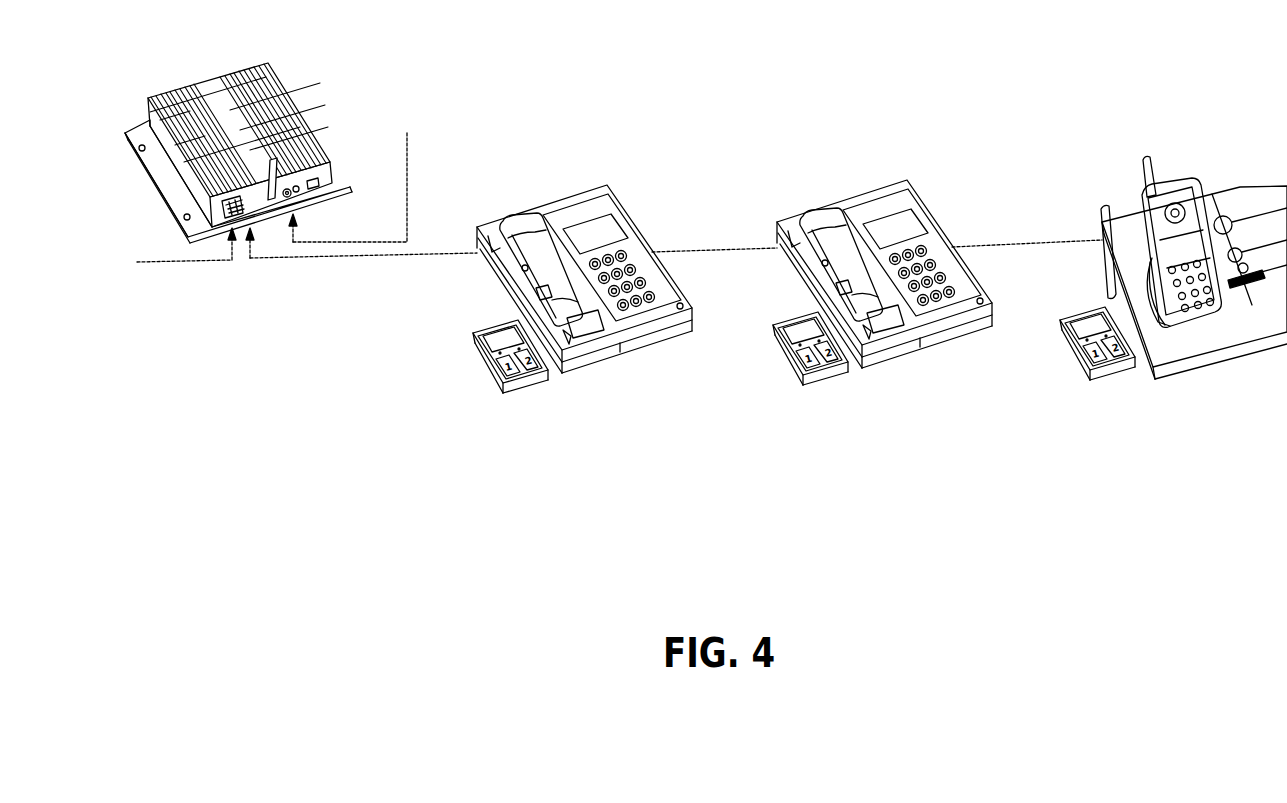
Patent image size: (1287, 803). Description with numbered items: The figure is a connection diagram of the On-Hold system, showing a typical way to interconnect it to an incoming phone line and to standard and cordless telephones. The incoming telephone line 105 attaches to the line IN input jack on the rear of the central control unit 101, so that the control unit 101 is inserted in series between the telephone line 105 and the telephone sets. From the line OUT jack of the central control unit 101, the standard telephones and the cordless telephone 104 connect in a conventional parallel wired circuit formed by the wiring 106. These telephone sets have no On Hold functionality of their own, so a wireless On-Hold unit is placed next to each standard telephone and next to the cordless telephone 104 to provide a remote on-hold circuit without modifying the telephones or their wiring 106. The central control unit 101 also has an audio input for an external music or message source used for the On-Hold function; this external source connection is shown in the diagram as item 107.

The central control unit 101 is at (280, 82).
The cordless telephone 104 is at (1240, 343).
The telephone line 105 is at (181, 280).
The wiring 106 is at (366, 273).
The external music or message source input 107 is at (422, 189).